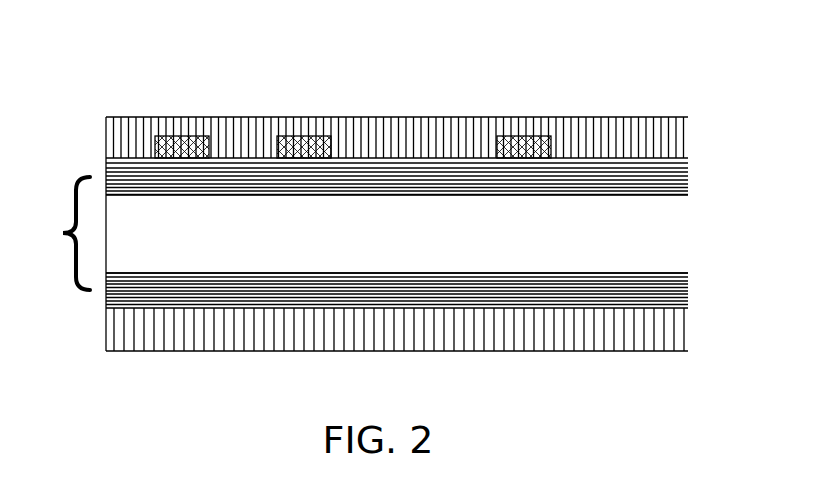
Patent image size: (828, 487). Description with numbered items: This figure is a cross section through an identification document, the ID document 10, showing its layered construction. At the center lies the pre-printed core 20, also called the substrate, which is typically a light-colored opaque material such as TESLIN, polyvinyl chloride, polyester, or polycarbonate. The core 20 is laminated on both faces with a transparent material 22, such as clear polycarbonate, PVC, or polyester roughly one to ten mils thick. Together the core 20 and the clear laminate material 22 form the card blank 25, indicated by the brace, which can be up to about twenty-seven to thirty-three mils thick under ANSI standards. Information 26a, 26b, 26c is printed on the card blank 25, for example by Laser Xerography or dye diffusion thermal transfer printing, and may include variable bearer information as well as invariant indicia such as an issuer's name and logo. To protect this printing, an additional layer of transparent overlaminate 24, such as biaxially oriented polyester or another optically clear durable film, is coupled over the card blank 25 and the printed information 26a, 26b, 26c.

The ID document 10 is at (389, 216).
The pre-printed core 20 is at (689, 233).
The transparent laminate material 22 is at (688, 172).
The transparent overlaminate 24 is at (632, 118).
The card blank 25 is at (55, 233).
The information 26a is at (190, 137).
The information 26b is at (313, 137).
The information 26c is at (523, 137).